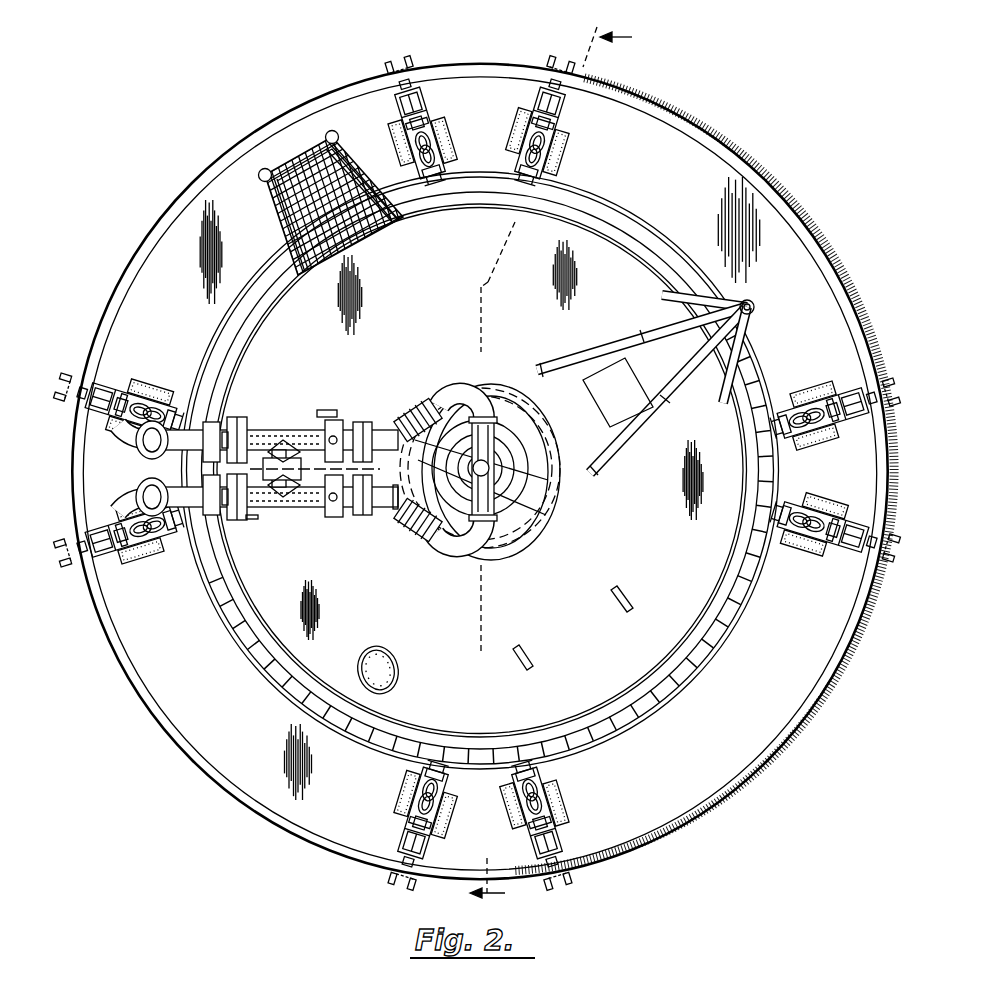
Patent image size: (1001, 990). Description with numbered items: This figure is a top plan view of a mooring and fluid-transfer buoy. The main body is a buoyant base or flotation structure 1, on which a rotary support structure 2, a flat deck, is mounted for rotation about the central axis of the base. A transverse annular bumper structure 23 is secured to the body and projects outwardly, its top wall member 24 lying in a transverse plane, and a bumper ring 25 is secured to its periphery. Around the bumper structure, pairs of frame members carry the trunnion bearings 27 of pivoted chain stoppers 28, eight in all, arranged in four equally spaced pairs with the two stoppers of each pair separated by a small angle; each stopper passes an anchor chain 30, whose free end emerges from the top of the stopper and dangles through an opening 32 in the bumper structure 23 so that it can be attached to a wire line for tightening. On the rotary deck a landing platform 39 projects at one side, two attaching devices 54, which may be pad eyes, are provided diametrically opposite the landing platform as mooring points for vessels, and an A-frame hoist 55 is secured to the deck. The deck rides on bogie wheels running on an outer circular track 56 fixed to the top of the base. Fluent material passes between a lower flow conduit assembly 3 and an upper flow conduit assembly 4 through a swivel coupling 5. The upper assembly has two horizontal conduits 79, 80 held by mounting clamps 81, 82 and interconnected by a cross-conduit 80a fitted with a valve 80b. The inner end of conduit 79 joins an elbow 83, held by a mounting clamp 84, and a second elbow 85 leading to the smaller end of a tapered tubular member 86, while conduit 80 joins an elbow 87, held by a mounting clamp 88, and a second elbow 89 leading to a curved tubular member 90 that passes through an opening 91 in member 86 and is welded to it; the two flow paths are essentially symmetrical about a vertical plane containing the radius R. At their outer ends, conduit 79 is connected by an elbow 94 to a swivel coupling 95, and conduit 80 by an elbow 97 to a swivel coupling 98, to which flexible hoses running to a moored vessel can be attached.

The buoyant base 1 is at (657, 232).
The rotary support structure 2 is at (254, 619).
The lower flow conduit assembly 3 is at (561, 469).
The upper flow conduit assembly 4 is at (400, 547).
The swivel coupling 5 is at (518, 499).
The bumper structure 23 is at (230, 792).
The top wall member 24 is at (274, 753).
The bumper ring 25 is at (302, 840).
The trunnion bearings 27 is at (392, 140).
The chain stopper 28 is at (425, 110).
The anchor chain 30 is at (392, 70).
The openings 32 is at (440, 160).
The landing platform 39 is at (283, 206).
The attaching devices 54 is at (612, 590).
The A-frame hoist 55 is at (640, 346).
The outer circular track 56 is at (276, 666).
The conduit 79 is at (265, 430).
The conduit 80 is at (262, 508).
The cross-conduit 80a is at (283, 497).
The valve 80b is at (315, 456).
The mounting clamp 81 is at (238, 420).
The mounting clamp 82 is at (243, 520).
The elbow 83 is at (405, 412).
The mounting clamp 84 is at (340, 420).
The second elbow 85 is at (458, 380).
The tapered tubular member 86 is at (500, 430).
The elbow 87 is at (400, 518).
The mounting clamp 88 is at (335, 517).
The second elbow 89 is at (458, 555).
The tubular member 90 is at (508, 520).
The opening 91 is at (458, 452).
The elbow 94 is at (140, 452).
The swivel coupling 95 is at (128, 438).
The elbow 97 is at (150, 478).
The swivel coupling 98 is at (130, 490).
The radius R is at (285, 426).